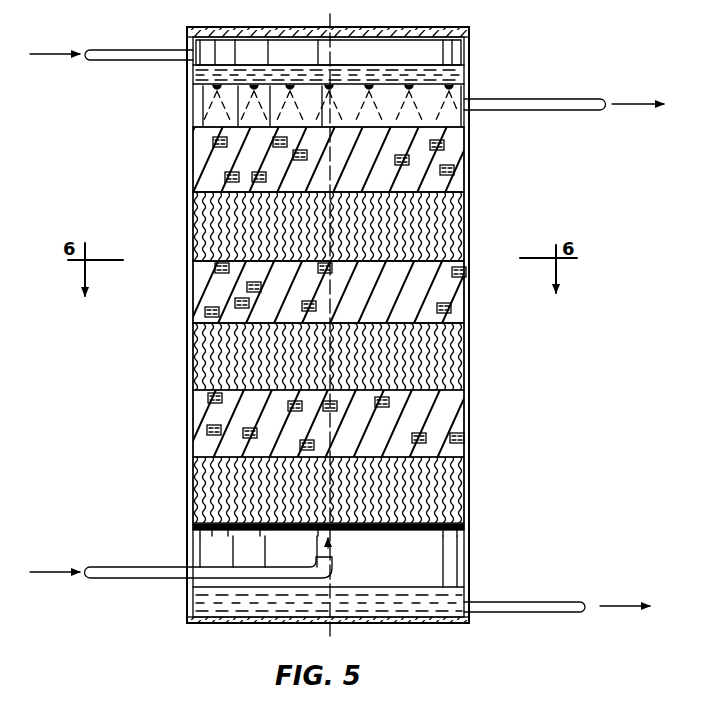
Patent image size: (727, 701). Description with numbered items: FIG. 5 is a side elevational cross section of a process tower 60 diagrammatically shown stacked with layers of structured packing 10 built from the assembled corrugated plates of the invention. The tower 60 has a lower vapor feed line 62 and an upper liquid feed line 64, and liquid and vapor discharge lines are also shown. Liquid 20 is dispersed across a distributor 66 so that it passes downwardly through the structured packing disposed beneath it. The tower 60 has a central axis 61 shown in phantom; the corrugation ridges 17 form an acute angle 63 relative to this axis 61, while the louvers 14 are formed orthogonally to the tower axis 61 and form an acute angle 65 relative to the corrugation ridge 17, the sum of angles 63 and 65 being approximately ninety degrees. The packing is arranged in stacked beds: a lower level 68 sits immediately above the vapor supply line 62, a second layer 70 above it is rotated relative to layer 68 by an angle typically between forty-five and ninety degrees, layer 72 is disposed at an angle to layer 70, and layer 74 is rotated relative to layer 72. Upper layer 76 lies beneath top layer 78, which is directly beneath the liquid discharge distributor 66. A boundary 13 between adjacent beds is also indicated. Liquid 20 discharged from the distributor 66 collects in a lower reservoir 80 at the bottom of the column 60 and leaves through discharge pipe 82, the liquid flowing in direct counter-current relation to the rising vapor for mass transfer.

The structured packing 10 is at (463, 483).
The layer boundary / spacer 13 is at (437, 323).
The louvers 14 is at (445, 311).
The corrugation ridges 17 is at (303, 143).
The liquid 20 is at (388, 96).
The process tower 60 is at (463, 438).
The central axis 61 is at (330, 44).
The lower vapor feed line 62 is at (155, 579).
The angle 63 is at (338, 148).
The upper liquid feed line 64 is at (135, 62).
The acute angle 65 is at (430, 298).
The distributor 66 is at (470, 85).
The lower level of structured packing 68 is at (193, 493).
The second layer of packing 70 is at (196, 420).
The layer 72 is at (193, 348).
The layer 74 is at (193, 306).
The upper layer 76 is at (462, 229).
The top layer 78 is at (455, 153).
The lower reservoir 80 is at (418, 605).
The discharge pipe 82 is at (555, 606).